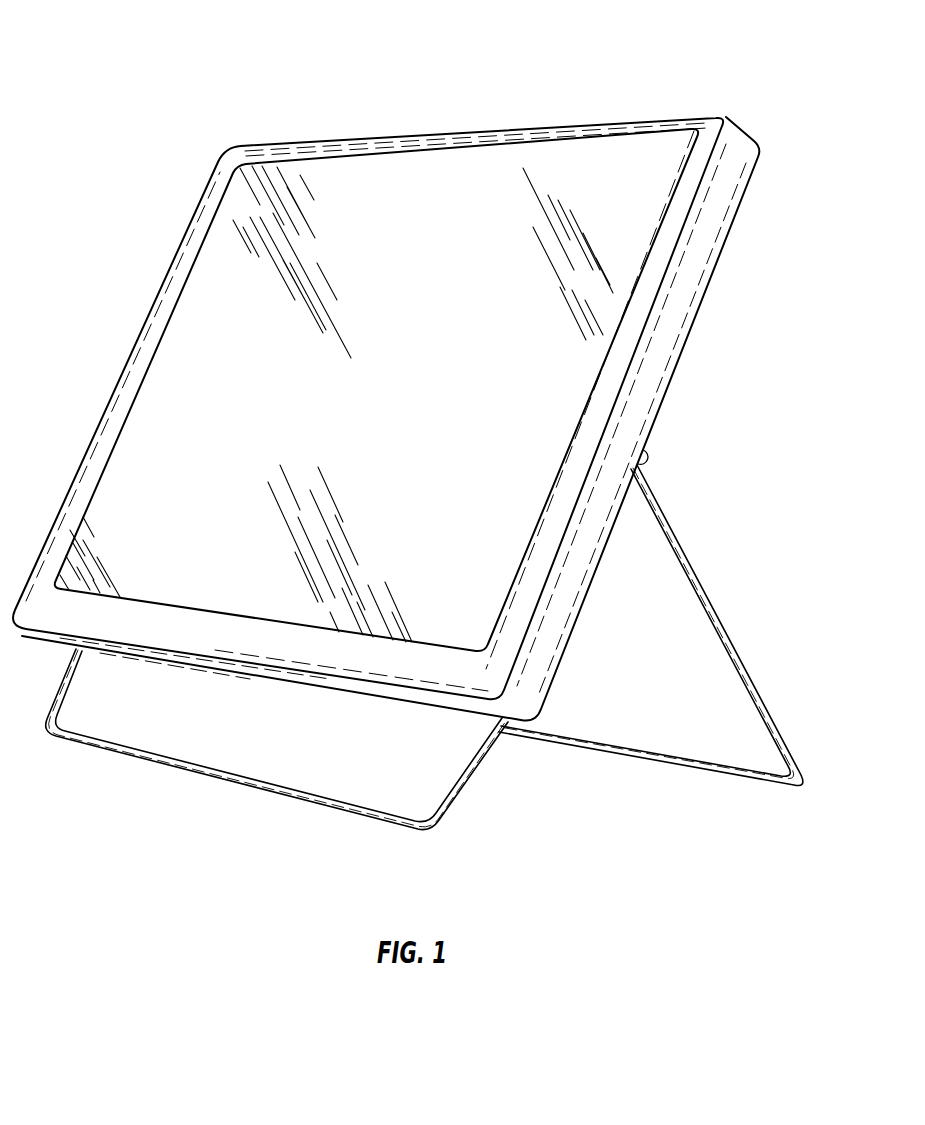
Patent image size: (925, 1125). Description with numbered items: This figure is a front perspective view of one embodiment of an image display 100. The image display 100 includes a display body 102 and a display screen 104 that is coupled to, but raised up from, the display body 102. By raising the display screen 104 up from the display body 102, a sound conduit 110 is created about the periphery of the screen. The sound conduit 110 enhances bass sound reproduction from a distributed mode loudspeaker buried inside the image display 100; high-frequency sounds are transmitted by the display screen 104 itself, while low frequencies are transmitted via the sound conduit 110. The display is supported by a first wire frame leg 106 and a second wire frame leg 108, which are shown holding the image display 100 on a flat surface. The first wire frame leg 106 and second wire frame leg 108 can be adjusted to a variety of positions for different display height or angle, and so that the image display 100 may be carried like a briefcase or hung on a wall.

The image display 100 is at (175, 43).
The display body 102 is at (725, 200).
The display screen 104 is at (640, 237).
The sound conduit 110 is at (632, 283).
The first wire frame leg 106 is at (475, 780).
The second wire frame leg 108 is at (727, 643).